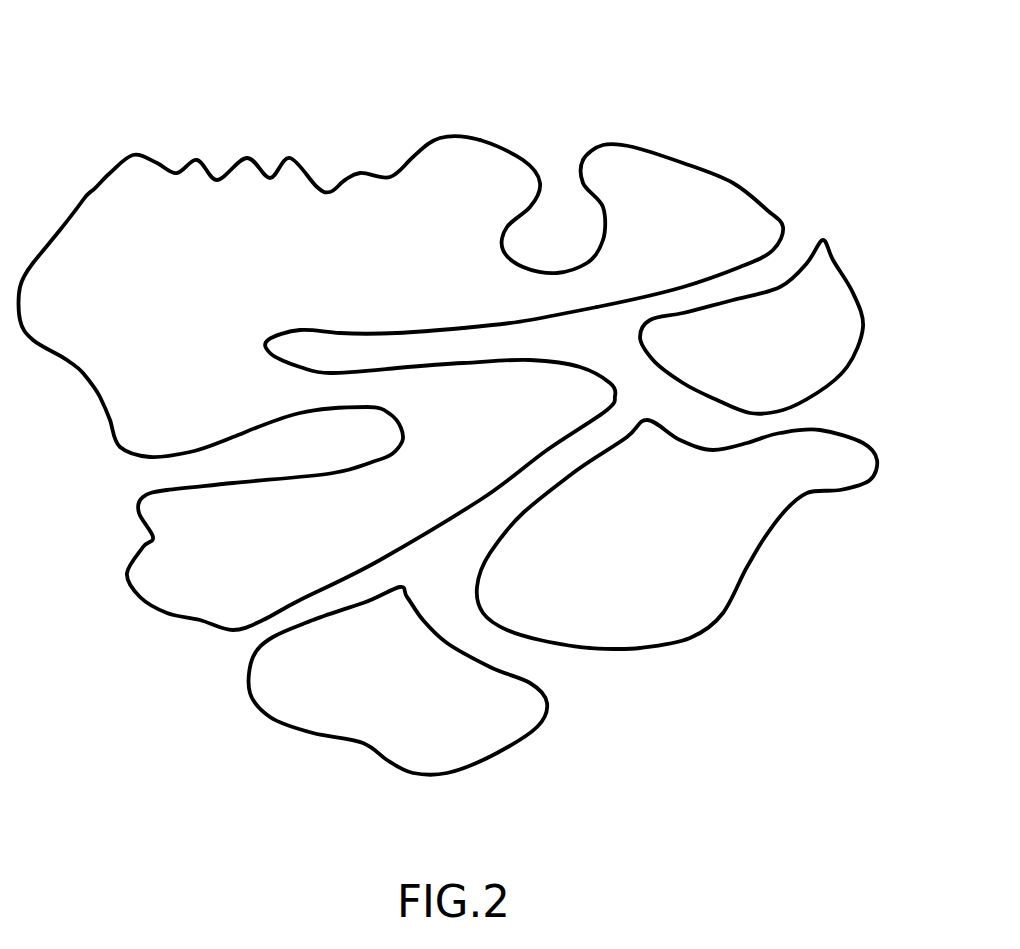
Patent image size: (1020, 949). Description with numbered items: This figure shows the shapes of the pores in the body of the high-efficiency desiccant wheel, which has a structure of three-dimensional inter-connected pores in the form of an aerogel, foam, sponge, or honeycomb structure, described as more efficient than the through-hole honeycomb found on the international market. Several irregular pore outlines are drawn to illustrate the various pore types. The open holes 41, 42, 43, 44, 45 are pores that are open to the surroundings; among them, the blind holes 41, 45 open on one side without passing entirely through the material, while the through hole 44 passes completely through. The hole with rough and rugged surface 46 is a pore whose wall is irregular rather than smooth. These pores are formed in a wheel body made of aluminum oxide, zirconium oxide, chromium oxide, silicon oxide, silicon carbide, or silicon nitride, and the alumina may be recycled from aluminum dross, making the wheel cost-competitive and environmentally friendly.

The open hole 41 is at (558, 235).
The open hole 42 is at (804, 228).
The open hole 43 is at (860, 402).
The through hole 44 is at (632, 368).
The blind hole 45 is at (321, 445).
The hole with rough and rugged surface 46 is at (215, 147).